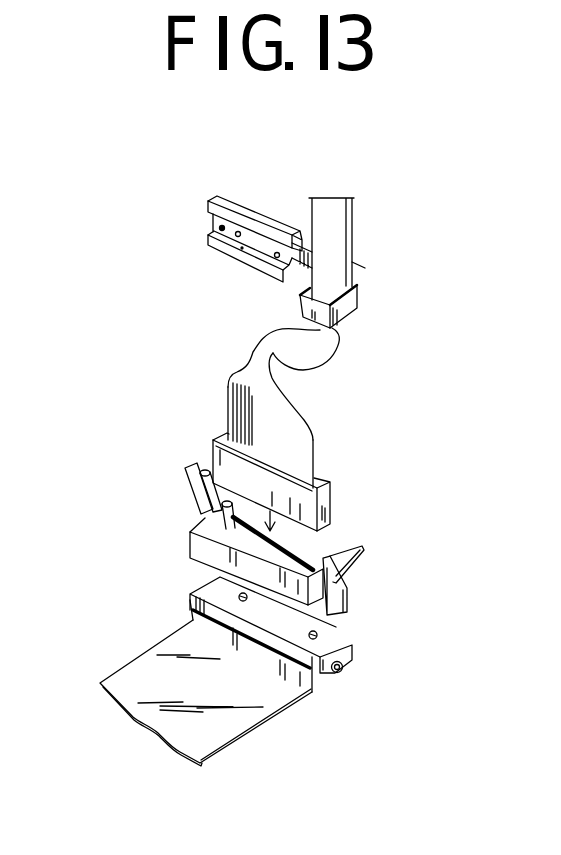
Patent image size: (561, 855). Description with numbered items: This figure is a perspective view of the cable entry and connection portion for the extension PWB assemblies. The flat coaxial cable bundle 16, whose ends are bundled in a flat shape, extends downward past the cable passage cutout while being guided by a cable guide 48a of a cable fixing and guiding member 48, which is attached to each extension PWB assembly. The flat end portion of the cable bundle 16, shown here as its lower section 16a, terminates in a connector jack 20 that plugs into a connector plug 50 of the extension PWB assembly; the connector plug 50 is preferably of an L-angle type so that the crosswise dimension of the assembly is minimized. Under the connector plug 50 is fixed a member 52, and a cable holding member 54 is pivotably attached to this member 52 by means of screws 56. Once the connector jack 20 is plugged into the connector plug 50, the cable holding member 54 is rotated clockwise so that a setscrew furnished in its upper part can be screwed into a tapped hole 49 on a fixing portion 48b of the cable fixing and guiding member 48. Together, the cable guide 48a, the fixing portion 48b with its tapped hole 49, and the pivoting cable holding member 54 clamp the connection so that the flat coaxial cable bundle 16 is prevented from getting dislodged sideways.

The flat coaxial cable bundle 16 is at (323, 353).
The cable end portion 16a is at (302, 441).
The connector jack 20 is at (327, 503).
The cable fixing and guiding member 48 is at (281, 226).
The cable guide 48a is at (350, 293).
The fixing portion 48b is at (246, 208).
The tapped hole 49 is at (233, 248).
The connector plug 50 is at (347, 610).
The member 52 is at (340, 637).
The cable holding member 54 is at (153, 667).
The screws 56 is at (340, 672).